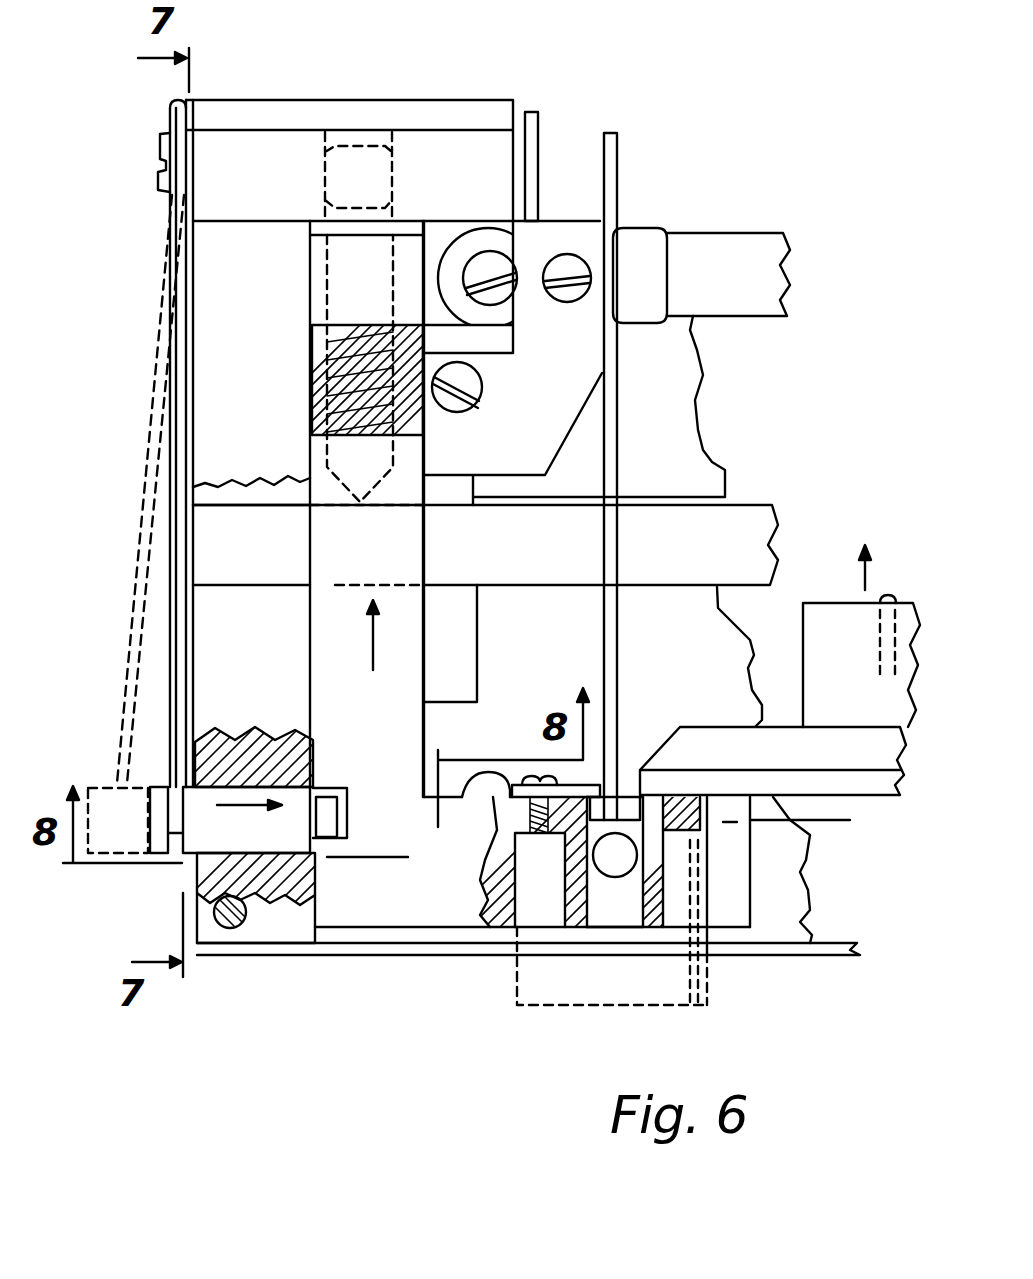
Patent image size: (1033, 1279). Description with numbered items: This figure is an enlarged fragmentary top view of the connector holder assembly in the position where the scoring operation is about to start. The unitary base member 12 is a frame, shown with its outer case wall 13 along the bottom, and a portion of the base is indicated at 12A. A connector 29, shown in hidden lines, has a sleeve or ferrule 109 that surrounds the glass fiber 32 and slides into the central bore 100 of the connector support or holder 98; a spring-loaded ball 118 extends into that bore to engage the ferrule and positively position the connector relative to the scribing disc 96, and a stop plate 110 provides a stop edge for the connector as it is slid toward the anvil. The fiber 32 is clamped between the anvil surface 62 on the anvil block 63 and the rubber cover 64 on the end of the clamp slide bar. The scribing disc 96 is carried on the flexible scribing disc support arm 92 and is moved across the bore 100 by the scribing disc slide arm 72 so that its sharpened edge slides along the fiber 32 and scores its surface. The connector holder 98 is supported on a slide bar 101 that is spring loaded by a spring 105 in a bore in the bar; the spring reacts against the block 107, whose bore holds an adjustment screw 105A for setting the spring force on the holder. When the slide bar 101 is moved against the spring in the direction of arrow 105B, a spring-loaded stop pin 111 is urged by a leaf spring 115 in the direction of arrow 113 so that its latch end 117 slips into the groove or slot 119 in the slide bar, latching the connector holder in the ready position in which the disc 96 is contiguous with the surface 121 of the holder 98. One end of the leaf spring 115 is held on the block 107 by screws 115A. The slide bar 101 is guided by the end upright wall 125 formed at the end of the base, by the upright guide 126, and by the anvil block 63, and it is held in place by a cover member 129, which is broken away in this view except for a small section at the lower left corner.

The unitary base member 12 is at (800, 888).
The frame boss 12A is at (470, 245).
The outer case wall 13 is at (770, 957).
The connector 29 is at (557, 1008).
The glass fiber 32 is at (613, 212).
The anvil surface 62 is at (605, 313).
The anvil block 63 is at (567, 378).
The rubber cover 64 is at (643, 252).
The scribing disc slide arm 72 is at (713, 527).
The scribing disc support arm 92 is at (822, 617).
The scribing disc 96 is at (690, 750).
The connector support or holder 98 is at (503, 897).
The central bore 100 is at (623, 895).
The slide bar 101 is at (408, 743).
The spring 105 is at (340, 365).
The adjustment screw 105A is at (348, 147).
The arrow 105B is at (370, 640).
The block 107 is at (238, 147).
The sleeve or ferrule 109 is at (626, 797).
The stop plate 110 is at (462, 800).
The spring-loaded stop pin 111 is at (203, 820).
The arrow 113 is at (200, 843).
The leaf spring 115 is at (177, 690).
The screws 115A is at (158, 148).
The latch end 117 is at (323, 805).
The spring-loaded ball 118 is at (612, 848).
The groove or slot 119 is at (343, 833).
The surface 121 is at (693, 793).
The end upright wall 125 is at (217, 657).
The upright guide 126 is at (478, 622).
The cover member 129 is at (278, 923).